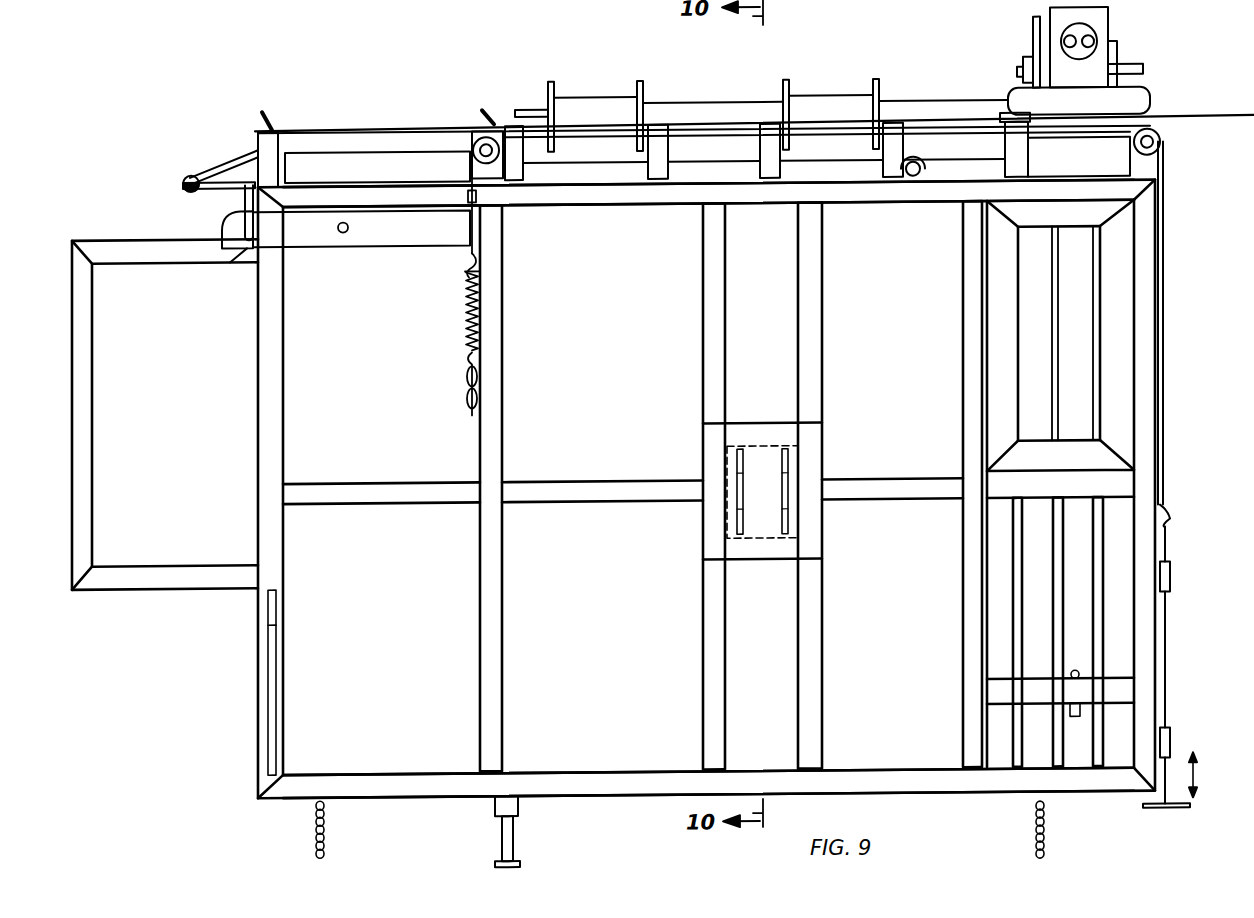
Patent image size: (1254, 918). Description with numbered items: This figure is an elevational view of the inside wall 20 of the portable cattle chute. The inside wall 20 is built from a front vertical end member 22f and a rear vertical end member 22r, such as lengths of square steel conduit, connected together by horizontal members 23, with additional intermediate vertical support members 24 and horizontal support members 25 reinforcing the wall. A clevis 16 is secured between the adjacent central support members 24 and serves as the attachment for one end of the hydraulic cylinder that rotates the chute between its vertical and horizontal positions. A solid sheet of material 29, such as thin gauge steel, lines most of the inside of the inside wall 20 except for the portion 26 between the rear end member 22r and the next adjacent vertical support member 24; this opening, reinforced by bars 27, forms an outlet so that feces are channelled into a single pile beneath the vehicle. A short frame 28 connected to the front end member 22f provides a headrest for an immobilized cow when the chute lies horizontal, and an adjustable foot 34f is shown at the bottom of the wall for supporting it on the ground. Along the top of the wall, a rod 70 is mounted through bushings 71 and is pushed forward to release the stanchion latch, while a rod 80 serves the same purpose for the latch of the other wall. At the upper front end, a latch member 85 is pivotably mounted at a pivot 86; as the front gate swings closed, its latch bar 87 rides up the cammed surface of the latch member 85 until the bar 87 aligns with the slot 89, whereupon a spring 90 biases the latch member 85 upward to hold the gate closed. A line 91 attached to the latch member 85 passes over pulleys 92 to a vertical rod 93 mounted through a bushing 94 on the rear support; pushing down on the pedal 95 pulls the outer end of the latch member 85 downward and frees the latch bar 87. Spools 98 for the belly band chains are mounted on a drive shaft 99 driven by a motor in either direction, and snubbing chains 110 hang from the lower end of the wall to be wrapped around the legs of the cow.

The clevis 16 is at (760, 462).
The inside wall 20 is at (482, 65).
The front vertical end member 22f is at (260, 433).
The rear vertical end member 22r is at (1148, 428).
The horizontal members 23 is at (583, 207).
The vertical support members 24 is at (822, 295).
The horizontal support members 25 is at (613, 488).
The outlet portion 26 is at (1078, 565).
The reinforcing bars 27 is at (1100, 650).
The short frame 28 is at (92, 372).
The solid sheet of material 29 is at (638, 496).
The front foot 34f is at (514, 842).
The rod 70 is at (1200, 118).
The bushings 71 is at (517, 118).
The rod 80 is at (222, 222).
The latch member 85 is at (395, 247).
The pivot 86 is at (343, 233).
The latch bar 87 is at (243, 200).
The slot 89 is at (232, 262).
The spring 90 is at (462, 318).
The line 91 is at (925, 158).
The pulleys 92 is at (482, 140).
The vertical rod 93 is at (1172, 692).
The bushing 94 is at (1172, 577).
The pedal 95 is at (1175, 815).
The spools 98 is at (556, 100).
The drive shaft 99 is at (720, 106).
The snubbing chains 110 is at (328, 834).